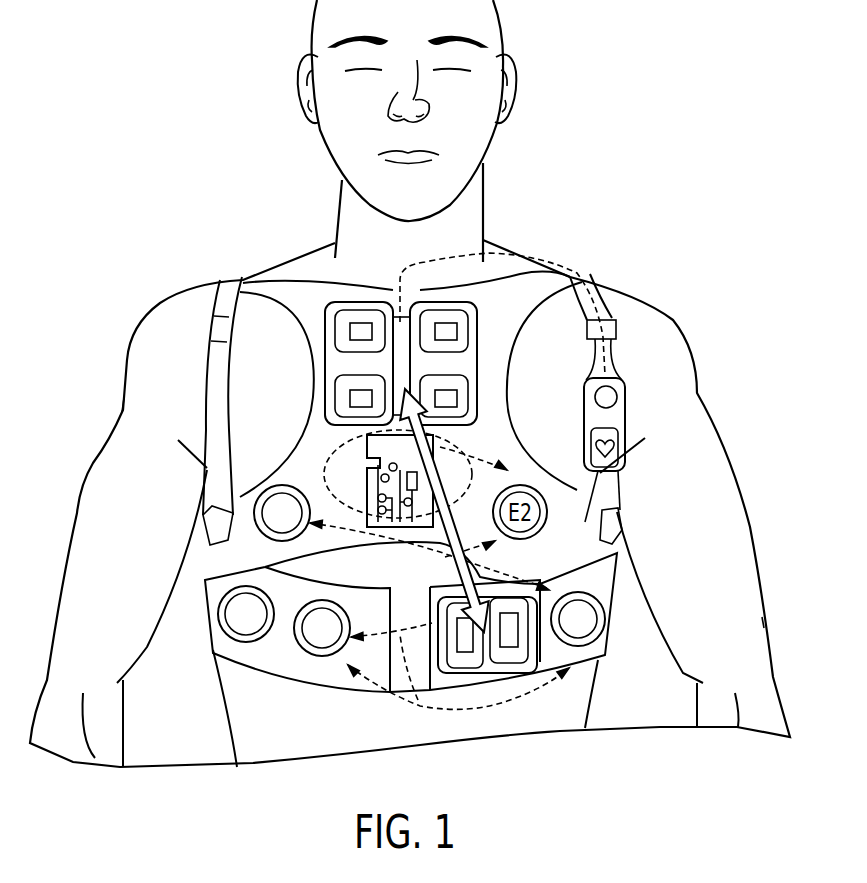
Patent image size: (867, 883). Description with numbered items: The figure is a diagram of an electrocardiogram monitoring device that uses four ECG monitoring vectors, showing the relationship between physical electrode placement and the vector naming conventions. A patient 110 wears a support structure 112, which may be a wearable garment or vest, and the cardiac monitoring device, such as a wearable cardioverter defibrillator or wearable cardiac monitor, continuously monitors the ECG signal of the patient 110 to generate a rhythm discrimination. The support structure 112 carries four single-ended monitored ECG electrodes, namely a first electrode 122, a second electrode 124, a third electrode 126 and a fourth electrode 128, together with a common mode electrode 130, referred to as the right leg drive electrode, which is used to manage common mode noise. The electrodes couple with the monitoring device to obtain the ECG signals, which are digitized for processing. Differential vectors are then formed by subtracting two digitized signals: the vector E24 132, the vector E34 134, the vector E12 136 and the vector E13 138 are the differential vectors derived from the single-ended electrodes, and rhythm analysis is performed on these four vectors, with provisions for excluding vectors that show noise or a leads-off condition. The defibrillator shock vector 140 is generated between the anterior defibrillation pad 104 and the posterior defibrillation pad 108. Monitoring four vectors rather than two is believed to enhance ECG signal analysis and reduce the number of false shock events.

The anterior defibrillation pad 104 is at (487, 663).
The posterior defibrillation pad 108 is at (460, 328).
The patient 110 is at (683, 330).
The support structure 112 is at (593, 577).
The electrode 122 is at (320, 652).
The electrode 124 is at (565, 510).
The electrode 126 is at (580, 633).
The electrode 128 is at (272, 535).
The common mode electrode 130 is at (247, 632).
The vector 132 is at (300, 478).
The vector 134 is at (397, 547).
The vector 136 is at (418, 700).
The vector 138 is at (432, 683).
The defibrillator shock vector 140 is at (440, 477).
The differential vector E12 is at (365, 617).
The differential vector E13 is at (372, 662).
The differential vector E24 is at (583, 493).
The differential vector E34 is at (545, 571).